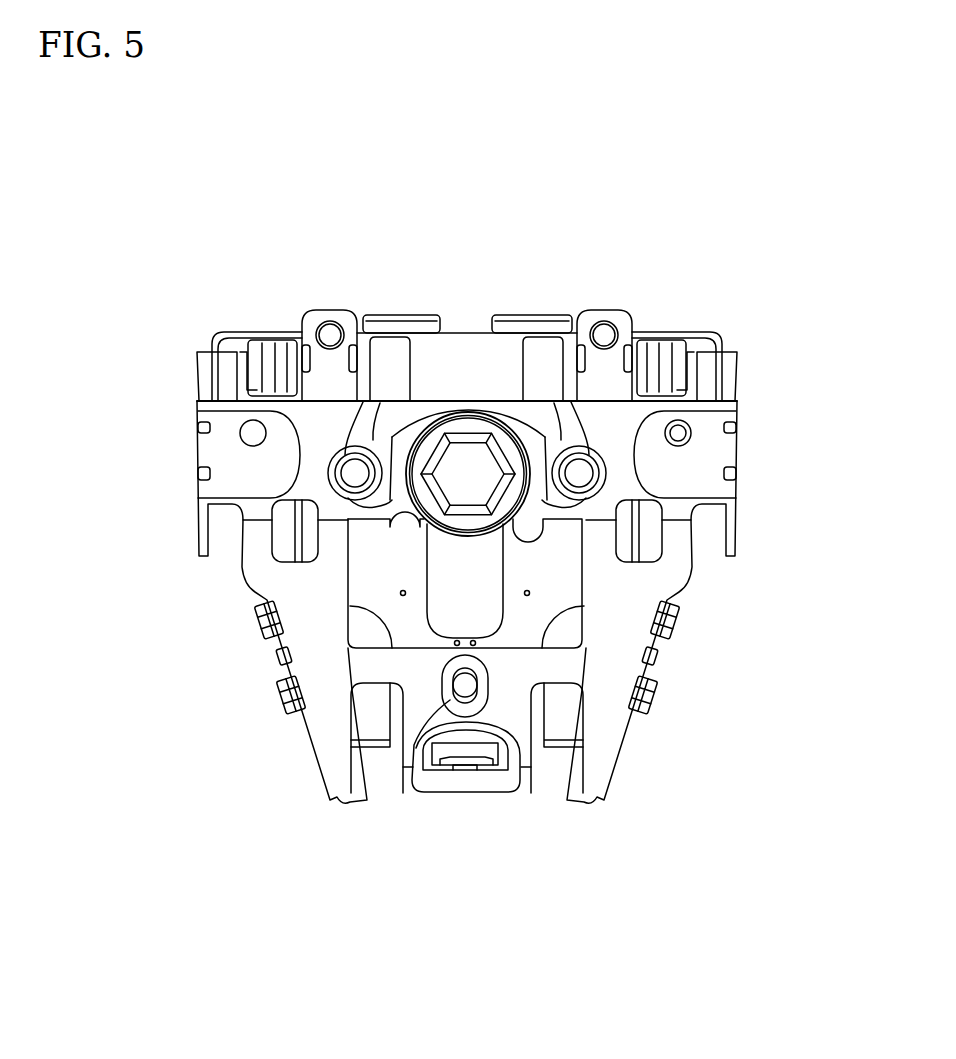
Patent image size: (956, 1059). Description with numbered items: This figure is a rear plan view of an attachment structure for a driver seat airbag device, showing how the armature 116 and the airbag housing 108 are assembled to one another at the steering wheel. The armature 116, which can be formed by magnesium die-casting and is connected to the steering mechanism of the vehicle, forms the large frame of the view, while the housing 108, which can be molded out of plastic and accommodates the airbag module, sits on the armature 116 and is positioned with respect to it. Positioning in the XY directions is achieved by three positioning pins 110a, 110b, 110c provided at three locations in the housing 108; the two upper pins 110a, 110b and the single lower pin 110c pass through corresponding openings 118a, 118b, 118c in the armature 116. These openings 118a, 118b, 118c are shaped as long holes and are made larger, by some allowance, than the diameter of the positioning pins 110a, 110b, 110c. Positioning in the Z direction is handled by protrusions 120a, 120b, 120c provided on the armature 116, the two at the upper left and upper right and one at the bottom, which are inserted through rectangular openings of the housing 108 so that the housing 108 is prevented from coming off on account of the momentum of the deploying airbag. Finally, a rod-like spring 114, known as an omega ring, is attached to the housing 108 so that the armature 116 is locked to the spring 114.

The housing 108 is at (467, 332).
The positioning pin 110a is at (333, 321).
The positioning pin 110b is at (601, 321).
The positioning pin 110c is at (470, 687).
The spring 114 is at (640, 555).
The armature 116 is at (313, 757).
The opening 118a is at (307, 310).
The opening 118b is at (625, 311).
The opening 118c is at (412, 800).
The protrusion 120a is at (230, 371).
The protrusion 120b is at (699, 374).
The protrusion 120c is at (467, 778).